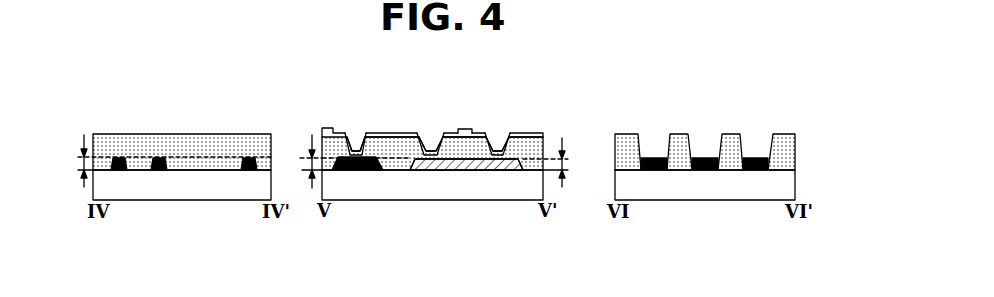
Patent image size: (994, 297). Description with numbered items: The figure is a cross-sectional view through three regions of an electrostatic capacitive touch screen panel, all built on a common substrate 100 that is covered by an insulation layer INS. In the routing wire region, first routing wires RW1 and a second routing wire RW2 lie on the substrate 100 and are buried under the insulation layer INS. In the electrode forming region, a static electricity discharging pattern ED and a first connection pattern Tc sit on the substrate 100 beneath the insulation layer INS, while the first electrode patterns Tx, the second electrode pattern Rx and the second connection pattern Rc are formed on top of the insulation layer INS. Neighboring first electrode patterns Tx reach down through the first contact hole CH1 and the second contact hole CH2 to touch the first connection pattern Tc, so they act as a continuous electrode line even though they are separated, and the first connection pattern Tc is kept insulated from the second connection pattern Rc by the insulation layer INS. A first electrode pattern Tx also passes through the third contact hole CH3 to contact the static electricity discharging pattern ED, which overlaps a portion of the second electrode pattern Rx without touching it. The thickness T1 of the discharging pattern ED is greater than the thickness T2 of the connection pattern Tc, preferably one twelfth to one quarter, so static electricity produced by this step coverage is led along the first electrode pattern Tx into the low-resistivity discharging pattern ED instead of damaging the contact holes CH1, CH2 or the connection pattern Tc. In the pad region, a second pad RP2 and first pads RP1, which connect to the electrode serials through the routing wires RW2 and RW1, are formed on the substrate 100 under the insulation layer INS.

The substrate 100 is at (185, 191).
The insulation layer INS is at (208, 136).
The first routing wire RW1 is at (118, 157).
The second routing wire RW2 is at (250, 157).
The thickness of the static electricity discharging pattern T1 is at (189, 161).
The thickness of the first connection pattern T2 is at (553, 162).
The static electricity discharging pattern ED is at (362, 171).
The first connecting pattern Tc is at (448, 171).
The second electrode pattern Rx is at (329, 128).
The first electrode pattern Tx is at (405, 133).
The second connecting pattern Rc is at (465, 129).
The first contact hole CH1 is at (427, 138).
The second contact hole CH2 is at (504, 138).
The third contact hole CH3 is at (357, 137).
The first pad RP1 is at (706, 157).
The second pad RP2 is at (652, 157).